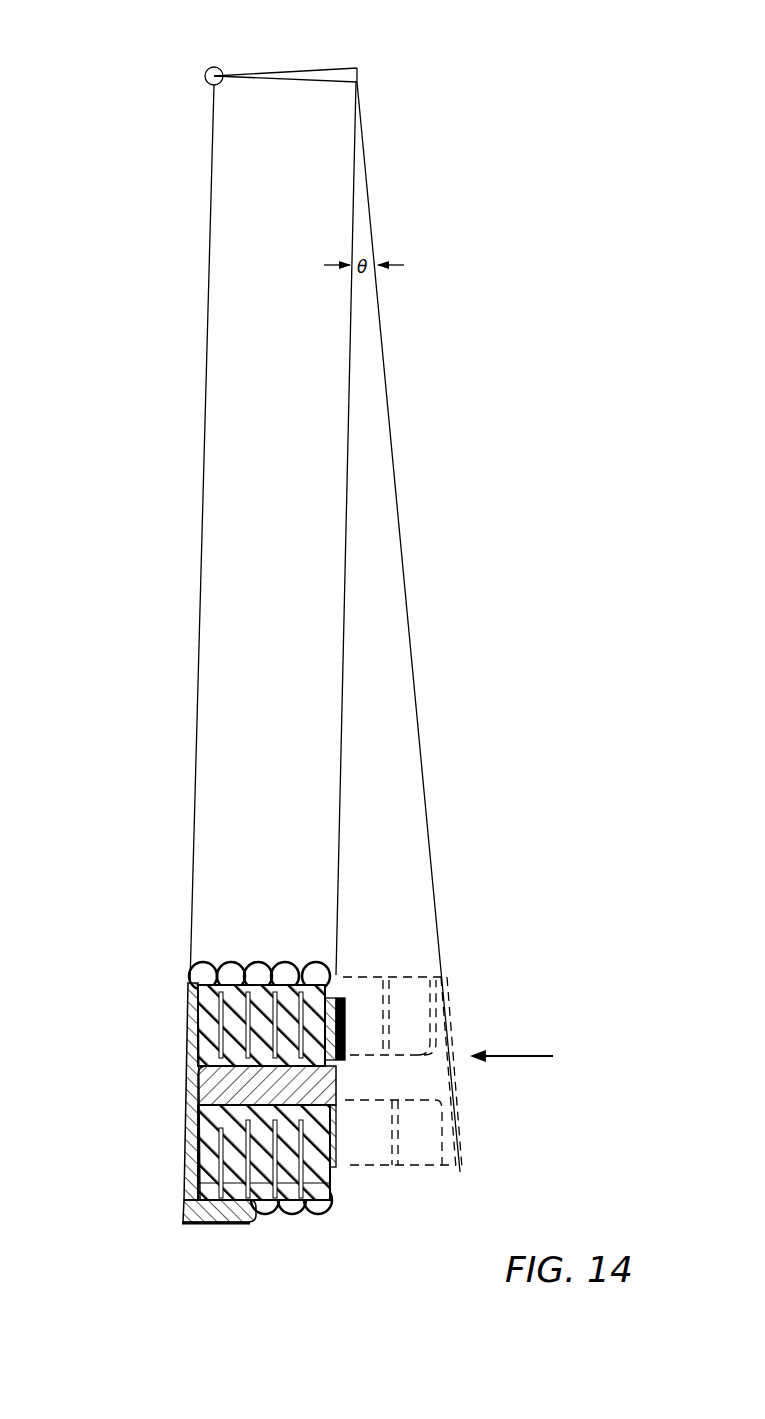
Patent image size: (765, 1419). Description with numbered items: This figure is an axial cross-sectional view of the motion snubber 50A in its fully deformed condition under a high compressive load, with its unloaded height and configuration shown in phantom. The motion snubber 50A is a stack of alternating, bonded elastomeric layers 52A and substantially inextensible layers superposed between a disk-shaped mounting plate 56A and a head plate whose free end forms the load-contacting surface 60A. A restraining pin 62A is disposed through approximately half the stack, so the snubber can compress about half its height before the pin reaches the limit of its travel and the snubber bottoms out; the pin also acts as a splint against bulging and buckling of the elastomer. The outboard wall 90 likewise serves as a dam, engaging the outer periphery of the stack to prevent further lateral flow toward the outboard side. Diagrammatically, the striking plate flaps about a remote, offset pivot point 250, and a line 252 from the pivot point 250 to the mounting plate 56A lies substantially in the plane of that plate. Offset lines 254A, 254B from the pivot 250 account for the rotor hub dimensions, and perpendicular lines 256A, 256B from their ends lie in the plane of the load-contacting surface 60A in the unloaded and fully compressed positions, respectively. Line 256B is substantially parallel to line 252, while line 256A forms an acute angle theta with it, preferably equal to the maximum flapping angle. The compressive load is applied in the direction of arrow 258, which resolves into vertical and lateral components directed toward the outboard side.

The pivot point 250 is at (205, 74).
The line 252 is at (207, 282).
The offset line 254A is at (318, 70).
The offset line 254B is at (319, 84).
The perpendicular line 256A is at (395, 448).
The perpendicular line 256B is at (346, 405).
The motion snubber 50A is at (470, 1021).
The arrow 258 is at (526, 1060).
The load-contacting surface 60A is at (340, 1164).
The restraining pin 62A is at (205, 1077).
The elastomeric layers 52A is at (300, 1212).
The mounting plate 56A is at (190, 1158).
The outboard wall 90 is at (233, 1225).